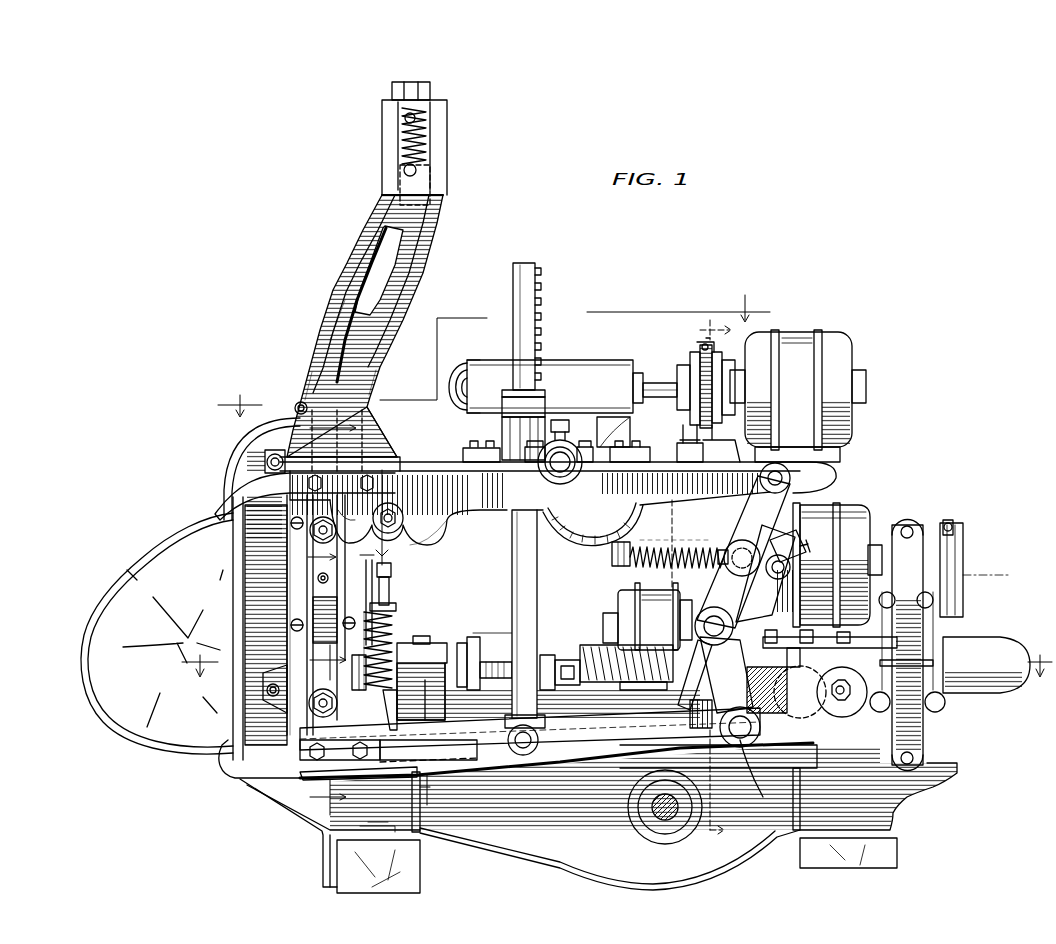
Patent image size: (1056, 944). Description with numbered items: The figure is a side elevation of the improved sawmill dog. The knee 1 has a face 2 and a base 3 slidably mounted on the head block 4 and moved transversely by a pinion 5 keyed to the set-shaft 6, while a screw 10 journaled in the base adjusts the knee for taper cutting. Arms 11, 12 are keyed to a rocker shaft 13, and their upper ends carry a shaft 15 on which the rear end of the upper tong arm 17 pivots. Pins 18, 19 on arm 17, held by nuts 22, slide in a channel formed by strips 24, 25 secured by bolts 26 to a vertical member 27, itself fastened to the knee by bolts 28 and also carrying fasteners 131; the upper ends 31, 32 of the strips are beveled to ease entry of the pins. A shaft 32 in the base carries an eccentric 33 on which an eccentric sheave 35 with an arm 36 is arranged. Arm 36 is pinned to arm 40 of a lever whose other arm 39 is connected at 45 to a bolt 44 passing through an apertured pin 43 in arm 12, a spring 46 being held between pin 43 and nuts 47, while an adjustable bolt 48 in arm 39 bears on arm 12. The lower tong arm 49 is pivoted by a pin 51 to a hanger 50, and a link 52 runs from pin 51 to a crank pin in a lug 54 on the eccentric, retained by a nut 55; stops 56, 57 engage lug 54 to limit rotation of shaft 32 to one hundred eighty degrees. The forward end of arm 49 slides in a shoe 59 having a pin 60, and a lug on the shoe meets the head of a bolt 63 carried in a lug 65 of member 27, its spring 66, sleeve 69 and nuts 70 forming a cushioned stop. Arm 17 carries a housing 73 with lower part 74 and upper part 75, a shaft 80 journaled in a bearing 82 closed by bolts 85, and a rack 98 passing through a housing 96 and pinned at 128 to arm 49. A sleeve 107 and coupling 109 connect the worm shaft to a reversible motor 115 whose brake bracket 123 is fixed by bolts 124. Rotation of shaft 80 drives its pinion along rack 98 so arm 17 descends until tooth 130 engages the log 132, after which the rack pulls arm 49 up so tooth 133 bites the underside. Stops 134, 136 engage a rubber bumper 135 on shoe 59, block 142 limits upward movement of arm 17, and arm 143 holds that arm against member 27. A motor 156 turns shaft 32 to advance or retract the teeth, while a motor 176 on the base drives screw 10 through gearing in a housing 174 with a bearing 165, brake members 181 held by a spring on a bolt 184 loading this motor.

The knee 1 is at (244, 440).
The face 2 is at (336, 646).
The base 3 is at (494, 350).
The head block 4 is at (720, 858).
The pinion 5 is at (326, 490).
The set-shaft 6 is at (321, 730).
The screw 10 is at (612, 650).
The arm 11 is at (679, 582).
The arm 12 is at (748, 500).
The rocker shaft 13 is at (710, 615).
The shaft 15 is at (783, 476).
The upper tong arm 17 is at (558, 512).
The pin 18 is at (323, 517).
The pin 19 is at (392, 510).
The nuts 22 is at (430, 535).
The strip 24 is at (290, 644).
The strip 25 is at (364, 585).
The bolts 26 is at (301, 402).
The vertical member 27 is at (326, 330).
The bolts 28 is at (264, 460).
The upper end of strip 31 is at (304, 368).
The shaft 32 is at (381, 390).
The eccentric 33 is at (870, 662).
The eccentric sheave 35 is at (802, 660).
The arm 36 is at (716, 718).
The arm 39 is at (770, 598).
The arm 40 is at (686, 652).
The apertured pin 43 is at (744, 550).
The bolt 44 is at (657, 543).
The pivotal connection 45 is at (792, 566).
The spring 46 is at (660, 545).
The nuts 47 is at (614, 558).
The adjustable bolt 48 is at (790, 536).
The lower tong arm 49 is at (537, 763).
The hanger 50 is at (720, 730).
The pin 51 is at (763, 797).
The link 52 is at (818, 752).
The lug 54 is at (770, 670).
The nut 55 is at (855, 702).
The adjustable stop 56 is at (772, 630).
The adjustable stop 57 is at (830, 623).
The shoe 59 is at (440, 698).
The pin 60 is at (316, 694).
The bolt 63 is at (395, 623).
The lug 65 is at (398, 605).
The spring 66 is at (394, 620).
The sleeve 69 is at (392, 590).
The nuts 70 is at (392, 569).
The housing 73 is at (545, 358).
The lower part of housing 74 is at (568, 542).
The upper part of housing 75 is at (549, 362).
The shaft 80 is at (560, 458).
The bearing 82 is at (548, 475).
The bolts 85 is at (532, 442).
The housing 96 is at (493, 410).
The rack 98 is at (560, 615).
The sleeve 107 is at (662, 397).
The coupling 109 is at (692, 362).
The reversible electric motor 115 is at (838, 338).
The bracket 123 is at (718, 445).
The bolts 124 is at (684, 447).
The pin 128 is at (522, 756).
The tooth 130 is at (297, 495).
The bolt 131 is at (308, 484).
The log 132 is at (118, 572).
The tooth 133 is at (238, 778).
The stop 134 is at (350, 560).
The rubber bumper 135 is at (358, 658).
The stop 136 is at (436, 540).
The block 142 is at (380, 422).
The arm 143 is at (356, 269).
The reversible electric motor 156 is at (627, 616).
The bearing 165 is at (682, 630).
The housing 174 is at (940, 645).
The reversible electric motor 176 is at (856, 512).
The brake members 181 is at (960, 556).
The bolt 184 is at (950, 518).